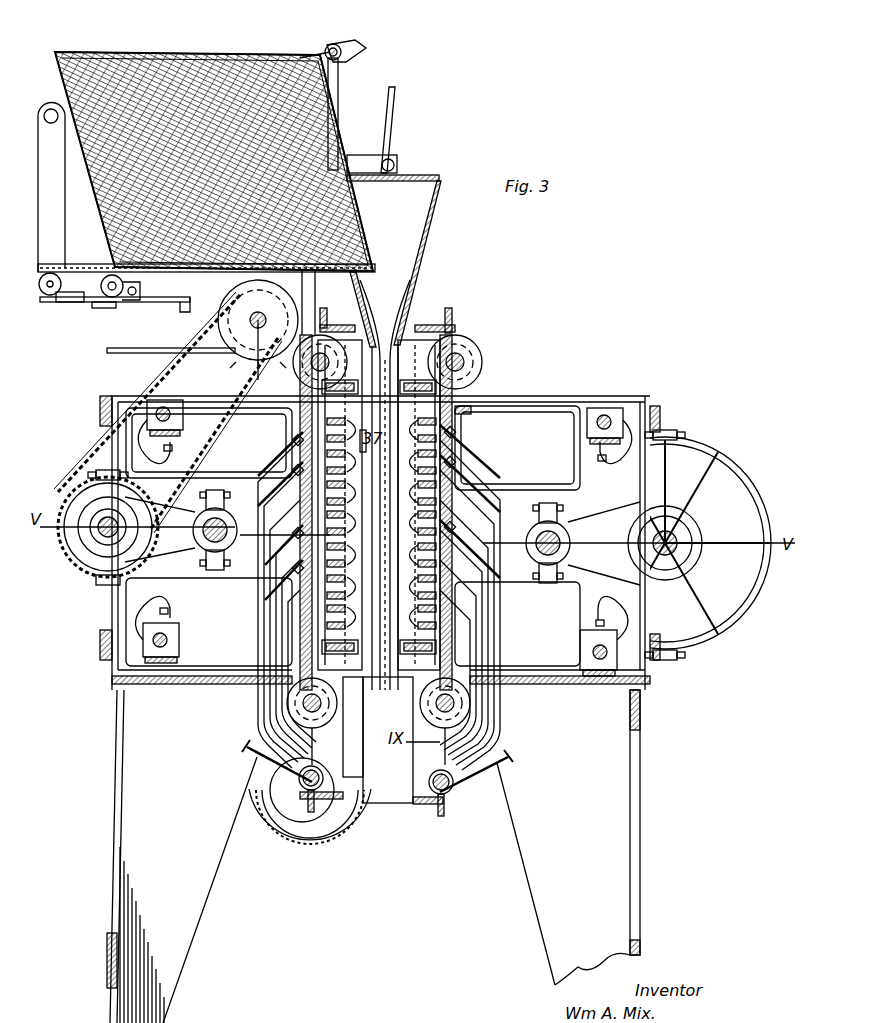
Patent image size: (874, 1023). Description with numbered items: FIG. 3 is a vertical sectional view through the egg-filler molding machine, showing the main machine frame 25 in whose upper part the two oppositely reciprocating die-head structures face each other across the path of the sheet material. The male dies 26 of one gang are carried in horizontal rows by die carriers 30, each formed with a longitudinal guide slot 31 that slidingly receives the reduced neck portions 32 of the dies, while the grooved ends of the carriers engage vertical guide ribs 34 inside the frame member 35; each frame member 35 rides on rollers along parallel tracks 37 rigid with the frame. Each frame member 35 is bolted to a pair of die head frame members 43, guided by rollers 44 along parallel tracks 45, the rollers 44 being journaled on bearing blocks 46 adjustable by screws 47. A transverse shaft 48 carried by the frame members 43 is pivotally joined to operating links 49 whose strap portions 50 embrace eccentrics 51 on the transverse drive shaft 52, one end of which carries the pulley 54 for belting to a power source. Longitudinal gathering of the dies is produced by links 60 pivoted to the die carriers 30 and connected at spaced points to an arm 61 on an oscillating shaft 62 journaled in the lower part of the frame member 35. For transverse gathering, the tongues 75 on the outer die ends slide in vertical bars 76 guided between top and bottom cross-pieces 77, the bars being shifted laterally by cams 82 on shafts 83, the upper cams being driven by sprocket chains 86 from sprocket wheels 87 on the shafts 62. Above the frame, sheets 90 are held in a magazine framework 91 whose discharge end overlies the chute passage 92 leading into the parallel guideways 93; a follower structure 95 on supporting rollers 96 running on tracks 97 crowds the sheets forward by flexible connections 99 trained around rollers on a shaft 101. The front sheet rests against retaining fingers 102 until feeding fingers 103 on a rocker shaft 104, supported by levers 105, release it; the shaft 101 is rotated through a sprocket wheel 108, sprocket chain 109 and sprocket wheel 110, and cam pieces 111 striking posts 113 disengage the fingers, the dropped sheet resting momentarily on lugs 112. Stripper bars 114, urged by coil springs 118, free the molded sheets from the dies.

The main machine frame 25 is at (642, 716).
The male dies 26 is at (440, 452).
The die carrier 30 is at (330, 548).
The longitudinal guide slot 31 is at (285, 542).
The reduced neck portions 32 is at (296, 468).
The vertical guide ribs 34 is at (471, 412).
The frame member 35 is at (455, 328).
The parallel tracks 37 is at (363, 441).
The die head frame members 43 is at (538, 384).
The rollers 44 is at (178, 400).
The parallel tracks 45 is at (570, 395).
The bearing blocks 46 is at (172, 410).
The screws 47 is at (168, 452).
The transverse shaft 48 is at (204, 536).
The operating links 49 is at (185, 553).
The strap portions 50 is at (82, 490).
The eccentrics 51 is at (694, 556).
The transverse drive shaft 52 is at (96, 540).
The pulley 54 is at (736, 618).
The links 60 is at (250, 718).
The arm 61 is at (256, 760).
The oscillating shaft 62 is at (306, 784).
The tongues 75 is at (300, 440).
The vertical bars 76 is at (296, 460).
The cross-pieces 77 is at (462, 382).
The cams 82 is at (326, 338).
The shafts 83 is at (312, 366).
The sprocket chains 86 is at (334, 838).
The sprocket wheels 87 is at (298, 822).
The sheets 90 is at (127, 53).
The magazine framework 91 is at (73, 302).
The chute passage 92 is at (412, 318).
The parallel guideways 93 is at (385, 485).
The follower structure 95 is at (105, 240).
The supporting rollers 96 is at (82, 302).
The tracks 97 is at (100, 308).
The flexible connections 99 is at (120, 295).
The shaft 101 is at (254, 330).
The retaining fingers 102 is at (352, 154).
The feeding fingers 103 is at (340, 105).
The rocker shaft 104 is at (332, 44).
The levers 105 is at (322, 51).
The sprocket wheel 108 is at (222, 322).
The sprocket chain 109 is at (168, 354).
The sprocket wheel 110 is at (100, 608).
The cam pieces 111 is at (358, 50).
The lugs 112 is at (440, 340).
The posts 113 is at (393, 110).
The stripper bars 114 is at (370, 330).
The coil springs 118 is at (410, 690).